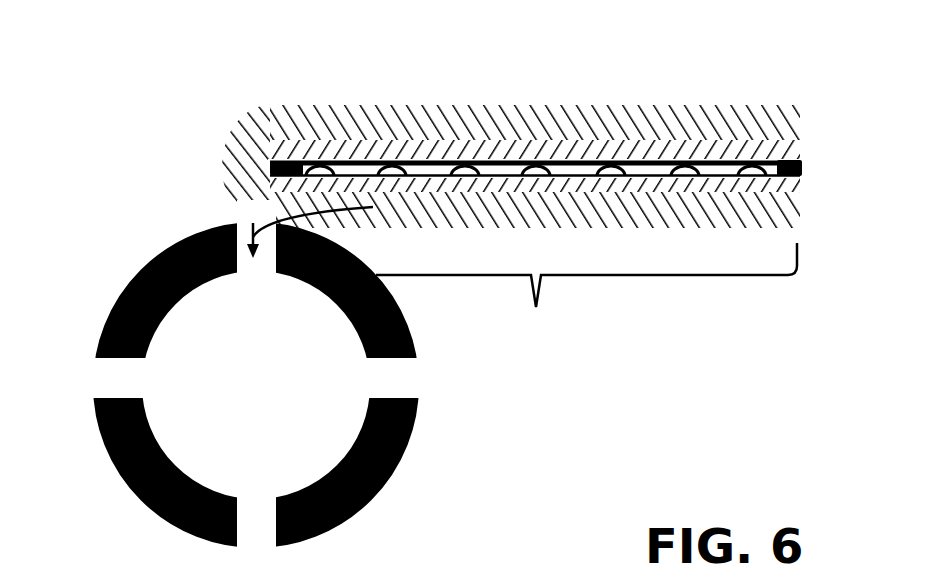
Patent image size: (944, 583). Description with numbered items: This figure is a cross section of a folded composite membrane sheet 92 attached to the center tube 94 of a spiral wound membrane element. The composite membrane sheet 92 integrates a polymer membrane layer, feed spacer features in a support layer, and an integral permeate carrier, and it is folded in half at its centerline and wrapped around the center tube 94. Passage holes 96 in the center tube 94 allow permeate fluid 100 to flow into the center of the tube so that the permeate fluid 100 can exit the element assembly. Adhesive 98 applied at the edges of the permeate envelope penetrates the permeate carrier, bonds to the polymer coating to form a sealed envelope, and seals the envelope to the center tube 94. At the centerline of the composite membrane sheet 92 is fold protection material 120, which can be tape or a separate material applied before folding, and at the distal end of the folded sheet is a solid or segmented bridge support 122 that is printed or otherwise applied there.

The composite membrane sheet 92 is at (512, 105).
The center tube 94 is at (395, 467).
The passage holes 96 is at (398, 377).
The adhesive 98 is at (552, 315).
The permeate fluid 100 is at (253, 223).
The fold protection material 120 is at (288, 140).
The bridge support 122 is at (803, 170).